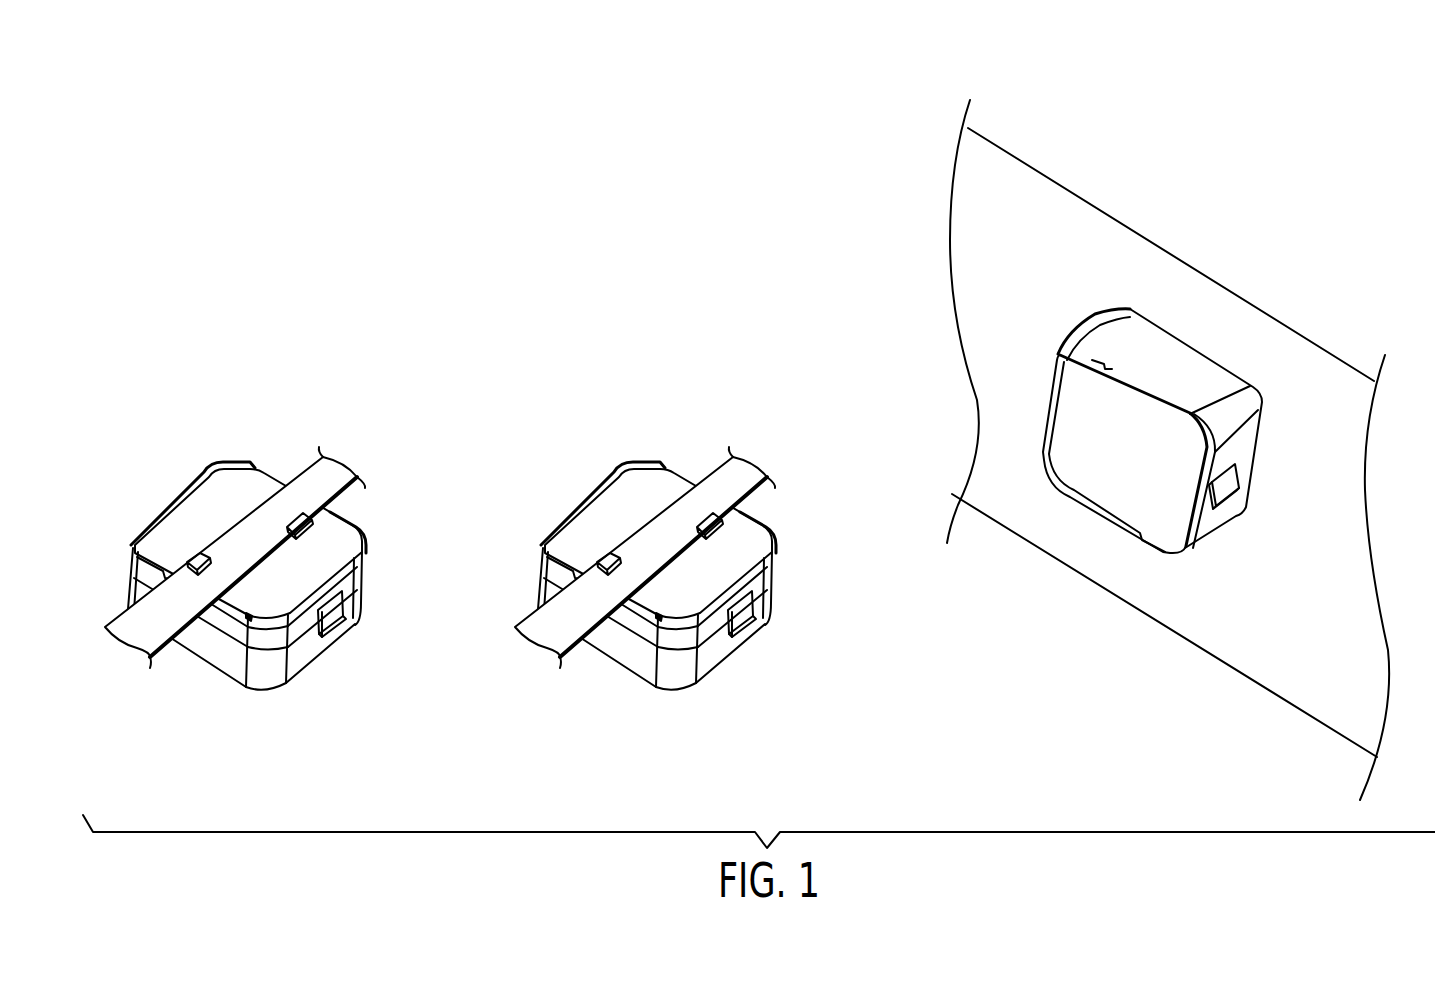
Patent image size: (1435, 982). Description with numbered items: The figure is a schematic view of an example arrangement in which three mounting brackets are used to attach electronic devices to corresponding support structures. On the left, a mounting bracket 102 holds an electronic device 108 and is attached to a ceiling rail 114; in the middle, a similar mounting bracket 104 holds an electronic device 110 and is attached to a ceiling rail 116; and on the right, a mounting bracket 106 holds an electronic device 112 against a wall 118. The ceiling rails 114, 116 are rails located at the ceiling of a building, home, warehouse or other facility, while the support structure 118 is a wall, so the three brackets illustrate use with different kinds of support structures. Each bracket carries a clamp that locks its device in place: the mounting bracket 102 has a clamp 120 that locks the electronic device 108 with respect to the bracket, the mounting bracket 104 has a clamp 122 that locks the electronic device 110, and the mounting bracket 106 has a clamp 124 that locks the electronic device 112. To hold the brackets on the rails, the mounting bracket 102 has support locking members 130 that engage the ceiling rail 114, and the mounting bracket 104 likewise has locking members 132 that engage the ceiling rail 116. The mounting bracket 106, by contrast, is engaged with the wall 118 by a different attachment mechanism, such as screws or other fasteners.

The mounting bracket 102 is at (363, 538).
The mounting bracket 104 is at (672, 576).
The mounting bracket 106 is at (1205, 364).
The electronic device 108 is at (363, 600).
The electronic device 110 is at (785, 613).
The electronic device 112 is at (1200, 523).
The ceiling rail 114 is at (310, 483).
The ceiling rail 116 is at (645, 536).
The wall 118 is at (1077, 225).
The clamp 120 is at (330, 620).
The clamp 122 is at (748, 647).
The clamp 124 is at (1225, 497).
The support locking members 130 is at (200, 557).
The locking members 132 is at (618, 527).